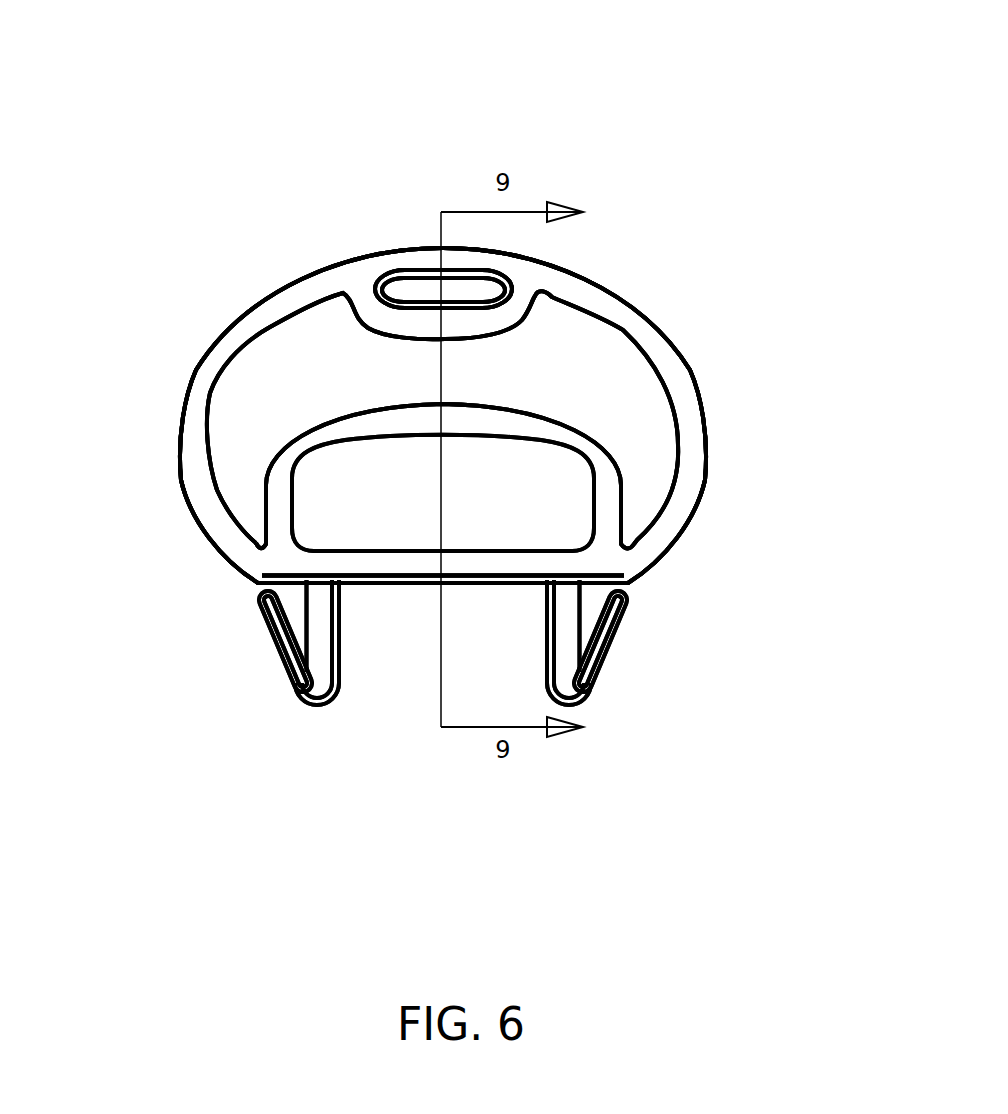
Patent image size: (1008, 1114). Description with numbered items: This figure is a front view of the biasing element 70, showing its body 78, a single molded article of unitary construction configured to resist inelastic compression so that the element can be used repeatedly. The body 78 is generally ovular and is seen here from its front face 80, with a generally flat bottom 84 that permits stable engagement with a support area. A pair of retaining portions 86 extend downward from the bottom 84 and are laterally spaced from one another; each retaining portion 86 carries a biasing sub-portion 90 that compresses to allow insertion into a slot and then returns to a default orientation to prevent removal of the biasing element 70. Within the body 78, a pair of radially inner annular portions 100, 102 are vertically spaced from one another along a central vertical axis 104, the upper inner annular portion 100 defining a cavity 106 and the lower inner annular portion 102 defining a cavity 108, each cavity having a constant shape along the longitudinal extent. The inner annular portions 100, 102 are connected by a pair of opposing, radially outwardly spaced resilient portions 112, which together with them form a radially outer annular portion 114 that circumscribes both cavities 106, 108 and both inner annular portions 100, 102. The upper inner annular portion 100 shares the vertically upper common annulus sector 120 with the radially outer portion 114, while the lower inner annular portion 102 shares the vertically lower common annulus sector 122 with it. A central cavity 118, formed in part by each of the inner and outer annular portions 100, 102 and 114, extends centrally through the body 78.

The biasing element 70 is at (188, 278).
The body 78 is at (558, 262).
The front face 80 is at (257, 553).
The bottom 84 is at (488, 592).
The retaining portion 86 is at (320, 710).
The biasing sub-portion 90 is at (610, 650).
The annular portion 100 is at (372, 302).
The annular portion 102 is at (265, 502).
The central vertical axis 104 is at (437, 220).
The cavity 106 is at (478, 290).
The cavity 108 is at (540, 510).
The resilient portion 112 is at (690, 407).
The radially outer annular portion 114 is at (712, 375).
The central cavity 118 is at (257, 390).
The vertically upper common annulus sector 120 is at (462, 258).
The vertically lower common annulus sector 122 is at (390, 563).